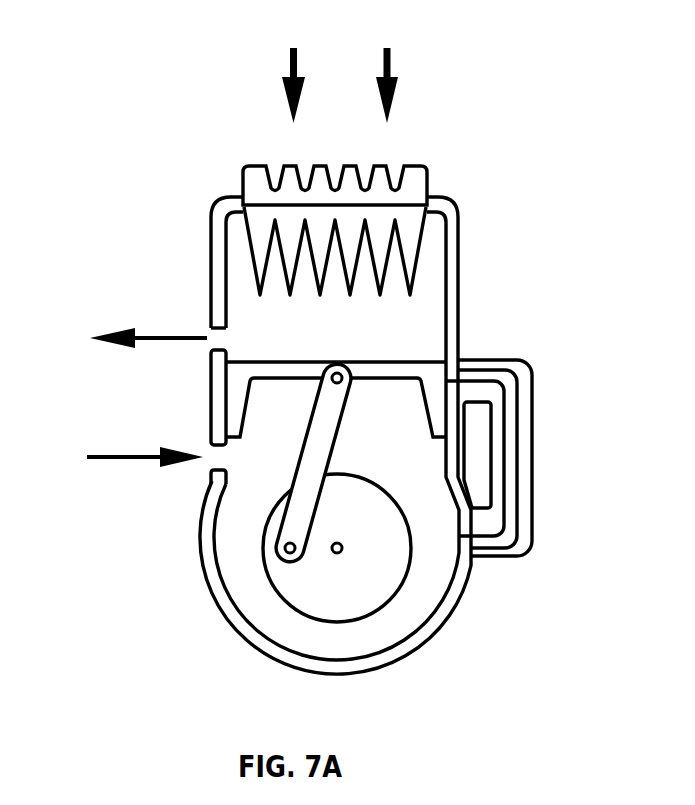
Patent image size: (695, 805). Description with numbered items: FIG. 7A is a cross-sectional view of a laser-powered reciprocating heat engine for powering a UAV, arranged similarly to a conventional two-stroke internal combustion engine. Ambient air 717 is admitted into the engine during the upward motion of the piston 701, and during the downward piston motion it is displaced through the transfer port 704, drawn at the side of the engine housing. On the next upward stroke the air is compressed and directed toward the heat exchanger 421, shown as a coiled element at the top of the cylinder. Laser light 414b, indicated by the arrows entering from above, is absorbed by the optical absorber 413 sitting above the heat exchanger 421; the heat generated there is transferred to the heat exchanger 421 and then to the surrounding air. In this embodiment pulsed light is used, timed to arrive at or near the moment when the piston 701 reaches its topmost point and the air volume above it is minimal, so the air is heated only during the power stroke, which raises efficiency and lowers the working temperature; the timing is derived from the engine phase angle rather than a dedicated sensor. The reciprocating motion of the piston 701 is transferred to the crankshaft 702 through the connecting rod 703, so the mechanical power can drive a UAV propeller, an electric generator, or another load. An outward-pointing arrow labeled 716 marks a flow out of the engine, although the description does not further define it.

The laser light 414b is at (375, 88).
The optical absorber 413 is at (378, 185).
The heat exchanger 421 is at (408, 218).
The outlet flow arrow 716 is at (125, 335).
The ambient air 717 is at (158, 450).
The piston 701 is at (422, 372).
The crankshaft 702 is at (392, 553).
The connecting rod 703 is at (332, 412).
The transfer port 704 is at (508, 528).